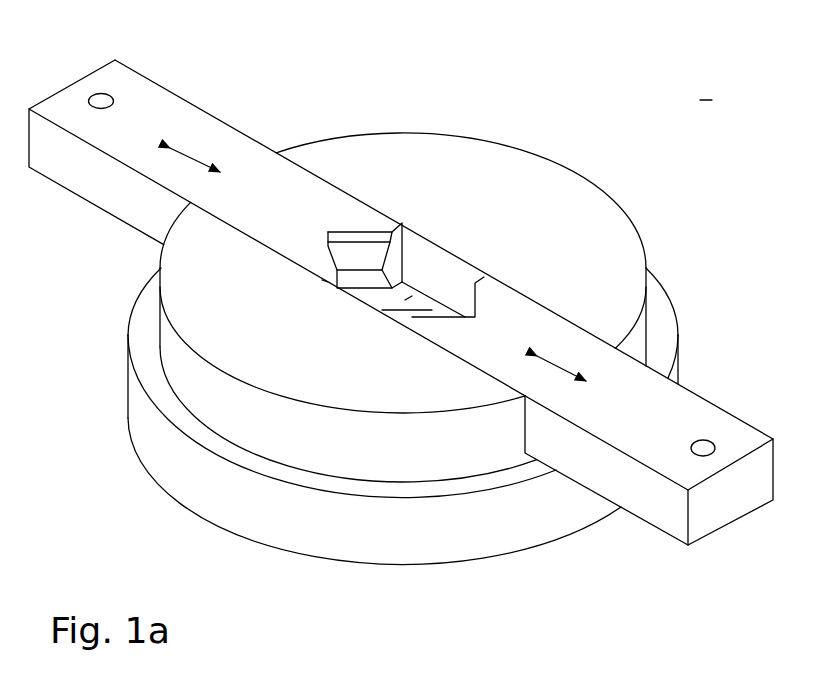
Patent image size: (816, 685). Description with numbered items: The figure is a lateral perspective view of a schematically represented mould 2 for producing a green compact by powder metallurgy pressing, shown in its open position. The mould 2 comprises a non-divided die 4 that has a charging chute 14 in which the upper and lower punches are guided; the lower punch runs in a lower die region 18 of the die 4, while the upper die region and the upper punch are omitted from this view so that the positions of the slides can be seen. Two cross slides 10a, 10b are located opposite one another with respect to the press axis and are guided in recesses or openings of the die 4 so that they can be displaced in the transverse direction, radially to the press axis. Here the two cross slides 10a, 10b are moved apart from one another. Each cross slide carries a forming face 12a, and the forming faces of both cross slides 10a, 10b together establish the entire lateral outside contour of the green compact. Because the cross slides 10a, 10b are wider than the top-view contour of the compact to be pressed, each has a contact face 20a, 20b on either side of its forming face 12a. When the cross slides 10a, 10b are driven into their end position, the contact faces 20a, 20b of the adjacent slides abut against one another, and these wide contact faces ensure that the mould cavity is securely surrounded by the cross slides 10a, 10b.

The mould 2 is at (706, 107).
The die 4 is at (425, 162).
The cross slide 10a is at (173, 108).
The cross slide 10b is at (673, 398).
The forming face 12a is at (357, 257).
The charging chute 14 is at (412, 287).
The lower die region 18 is at (445, 548).
The contact face 20a is at (322, 278).
The contact face 20b is at (410, 298).